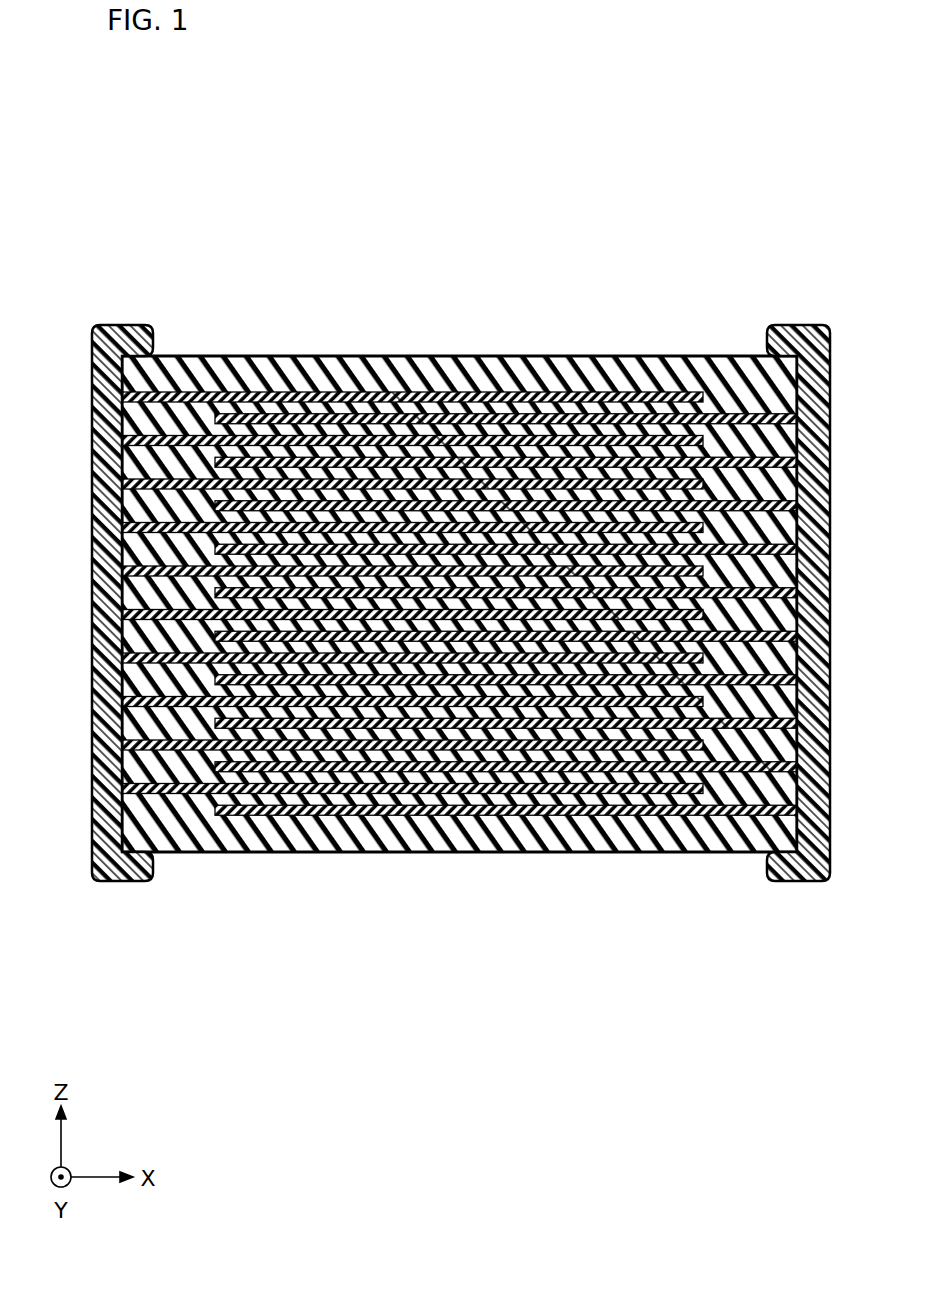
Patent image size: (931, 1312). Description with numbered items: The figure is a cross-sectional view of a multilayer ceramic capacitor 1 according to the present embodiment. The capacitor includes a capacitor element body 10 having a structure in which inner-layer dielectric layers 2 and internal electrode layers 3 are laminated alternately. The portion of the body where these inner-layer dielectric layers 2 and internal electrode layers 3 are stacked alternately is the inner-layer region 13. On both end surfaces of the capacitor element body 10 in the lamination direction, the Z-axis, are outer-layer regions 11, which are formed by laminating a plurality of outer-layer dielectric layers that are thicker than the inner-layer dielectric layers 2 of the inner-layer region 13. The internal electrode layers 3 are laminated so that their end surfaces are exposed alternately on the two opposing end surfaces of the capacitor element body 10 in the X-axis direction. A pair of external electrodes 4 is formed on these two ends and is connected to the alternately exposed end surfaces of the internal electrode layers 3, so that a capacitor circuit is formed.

The multilayer ceramic capacitor 1 is at (431, 634).
The inner-layer dielectric layer 2 is at (346, 385).
The internal electrode layer 3 is at (522, 388).
The external electrode 4 is at (802, 335).
The capacitor element body 10 is at (414, 626).
The outer-layer region 11 is at (459, 541).
The inner-layer region 13 is at (414, 543).